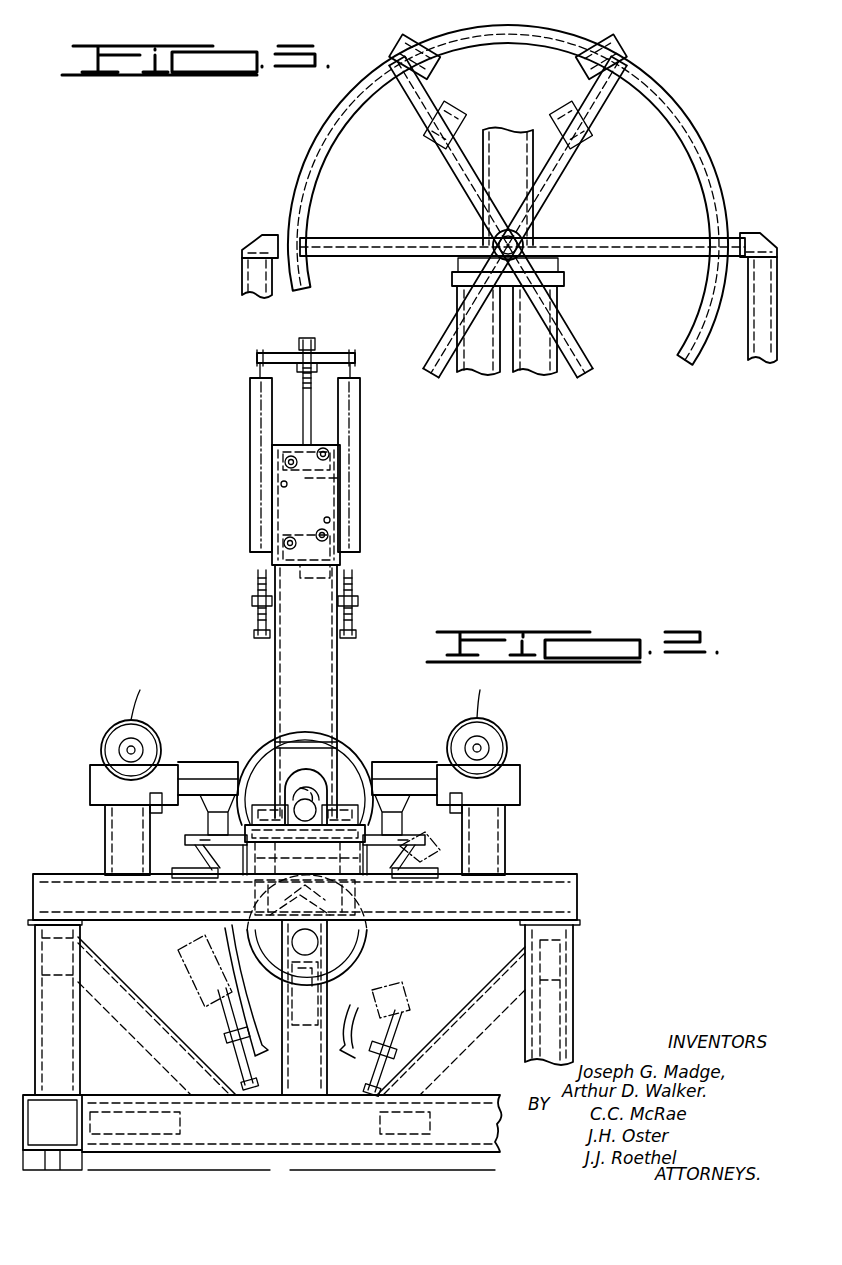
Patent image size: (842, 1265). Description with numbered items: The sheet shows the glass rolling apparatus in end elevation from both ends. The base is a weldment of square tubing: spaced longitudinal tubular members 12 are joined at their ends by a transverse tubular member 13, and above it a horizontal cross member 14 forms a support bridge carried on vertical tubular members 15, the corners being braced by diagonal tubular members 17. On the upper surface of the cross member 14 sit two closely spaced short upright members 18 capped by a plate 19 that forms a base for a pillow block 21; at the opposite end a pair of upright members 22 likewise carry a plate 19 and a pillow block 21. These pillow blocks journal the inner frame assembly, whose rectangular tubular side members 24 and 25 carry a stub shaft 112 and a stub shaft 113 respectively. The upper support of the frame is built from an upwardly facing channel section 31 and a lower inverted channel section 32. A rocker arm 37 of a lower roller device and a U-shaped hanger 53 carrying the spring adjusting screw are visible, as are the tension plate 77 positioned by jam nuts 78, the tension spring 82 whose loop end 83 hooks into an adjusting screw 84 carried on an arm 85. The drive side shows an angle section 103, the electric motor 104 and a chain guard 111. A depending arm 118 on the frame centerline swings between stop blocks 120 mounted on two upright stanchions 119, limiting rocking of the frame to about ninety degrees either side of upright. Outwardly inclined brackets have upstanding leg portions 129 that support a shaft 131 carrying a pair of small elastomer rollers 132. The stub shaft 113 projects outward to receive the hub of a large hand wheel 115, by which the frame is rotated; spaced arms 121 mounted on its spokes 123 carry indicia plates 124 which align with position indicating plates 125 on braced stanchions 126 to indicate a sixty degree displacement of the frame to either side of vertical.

In FIG. 2, the longitudinally extending square tubular member 12 is at (42, 1120).
In FIG. 2, the transversely extending square tubular member 13 is at (490, 1150).
In FIG. 2, the horizontally extending square tubular cross member 14 is at (577, 896).
In FIG. 2, the vertically extending square tubular member 15 is at (573, 995).
In FIG. 2, the diagonally extending square tubular member 17 is at (500, 1130).
In FIG. 2, the upright member 18 is at (345, 870).
In FIG. 5, the plate 19 is at (555, 278).
In FIG. 2, the plate 19 is at (355, 815).
In FIG. 5, the pillow block 21 is at (525, 240).
In FIG. 2, the pillow block 21 is at (325, 800).
In FIG. 5, the upright member 22 is at (525, 375).
In FIG. 2, the side member 24 is at (333, 678).
In FIG. 5, the side member 25 is at (505, 135).
In FIG. 2, the upwardly facing channel section 31 is at (345, 482).
In FIG. 2, the inverted channel section 32 is at (290, 524).
In FIG. 2, the rocker arm 37 is at (200, 762).
In FIG. 2, the U-shaped hanger 53 is at (228, 972).
In FIG. 2, the tension plate 77 is at (335, 355).
In FIG. 2, the jam nut 78 is at (306, 338).
In FIG. 2, the tension spring 82 is at (360, 415).
In FIG. 2, the loop end 83 is at (350, 580).
In FIG. 2, the adjusting screw 84 is at (356, 628).
In FIG. 2, the arm 85 is at (358, 602).
In FIG. 2, the angle section 103 is at (430, 882).
In FIG. 2, the electric motor 104 is at (357, 992).
In FIG. 2, the chain guard 111 is at (330, 978).
In FIG. 2, the stub shaft 112 is at (330, 758).
In FIG. 5, the stub shaft 113 is at (500, 238).
In FIG. 5, the hand wheel 115 is at (678, 122).
In FIG. 2, the depending arm 118 is at (366, 945).
In FIG. 2, the upright stanchion 119 is at (528, 822).
In FIG. 2, the stop block 120 is at (525, 798).
In FIG. 5, the arm 121 is at (592, 112).
In FIG. 5, the handwheel spoke 123 is at (550, 168).
In FIG. 5, the indicia plate 124 is at (632, 52).
In FIG. 5, the position indicating plate 125 is at (740, 240).
In FIG. 5, the braced stanchion 126 is at (758, 350).
In FIG. 2, the upstanding leg portion 129 is at (452, 752).
In FIG. 2, the shaft 131 is at (480, 747).
In FIG. 2, the small elastomer roller 132 is at (321, 698).